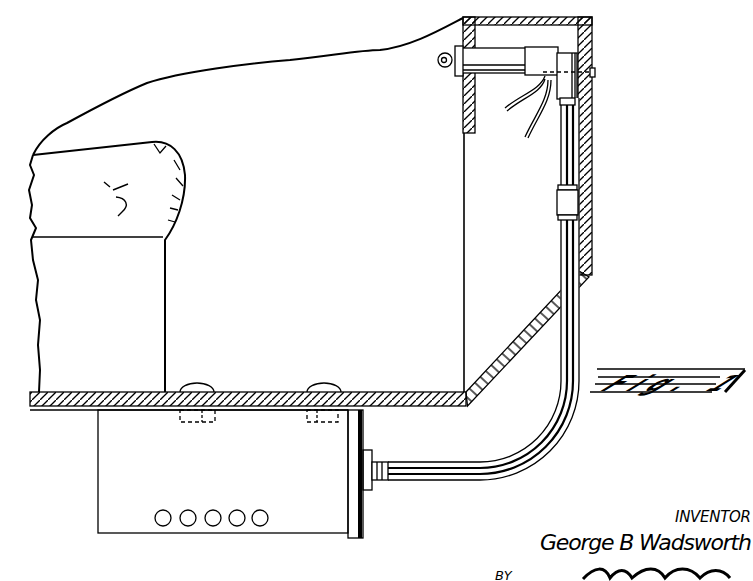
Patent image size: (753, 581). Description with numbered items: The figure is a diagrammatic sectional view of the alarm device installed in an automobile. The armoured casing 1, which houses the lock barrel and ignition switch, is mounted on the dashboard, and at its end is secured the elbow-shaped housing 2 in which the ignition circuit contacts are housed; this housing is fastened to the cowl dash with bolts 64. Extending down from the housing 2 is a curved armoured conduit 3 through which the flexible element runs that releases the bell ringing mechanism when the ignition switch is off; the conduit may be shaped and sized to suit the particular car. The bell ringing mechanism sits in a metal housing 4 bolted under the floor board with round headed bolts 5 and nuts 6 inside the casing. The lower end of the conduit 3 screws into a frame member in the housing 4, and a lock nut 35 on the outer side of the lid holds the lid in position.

The armoured casing 1 is at (485, 63).
The elbow-shaped housing 2 is at (540, 60).
The armoured conduit 3 is at (563, 150).
The metal housing 4 is at (298, 512).
The round headed bolts 5 is at (207, 391).
The nuts 6 is at (218, 422).
The lock nut 35 is at (370, 452).
The bolts 64 is at (594, 74).